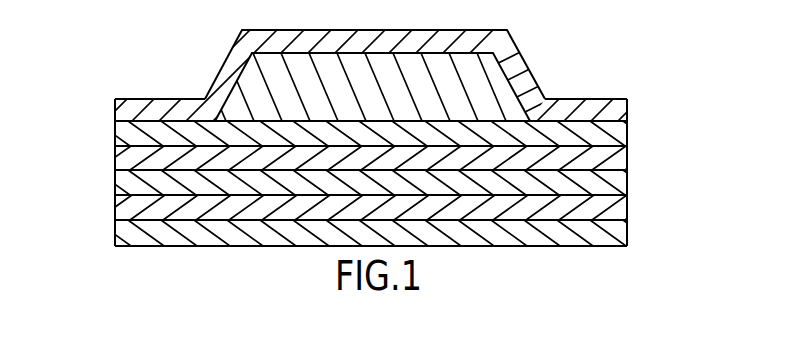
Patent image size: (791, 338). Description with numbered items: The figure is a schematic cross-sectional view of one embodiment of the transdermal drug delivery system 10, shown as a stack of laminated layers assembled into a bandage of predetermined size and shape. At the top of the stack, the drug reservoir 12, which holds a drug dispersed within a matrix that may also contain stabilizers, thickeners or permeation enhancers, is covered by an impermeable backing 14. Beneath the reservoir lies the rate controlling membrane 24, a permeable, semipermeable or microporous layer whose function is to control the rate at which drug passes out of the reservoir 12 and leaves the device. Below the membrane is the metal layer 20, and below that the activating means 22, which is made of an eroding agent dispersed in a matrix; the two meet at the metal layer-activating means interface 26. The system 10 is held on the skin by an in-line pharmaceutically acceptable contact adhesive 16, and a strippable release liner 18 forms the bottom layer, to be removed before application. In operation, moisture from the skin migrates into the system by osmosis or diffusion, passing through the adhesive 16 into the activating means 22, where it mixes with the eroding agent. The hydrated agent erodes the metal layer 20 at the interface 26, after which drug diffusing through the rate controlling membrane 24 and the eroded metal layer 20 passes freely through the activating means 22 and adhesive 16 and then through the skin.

The transdermal drug delivery system 10 is at (601, 39).
The drug reservoir 12 is at (438, 57).
The impermeable backing 14 is at (613, 102).
The rate controlling membrane 24 is at (620, 130).
The metal layer 20 is at (620, 158).
The metal layer-activating means interface 26 is at (135, 167).
The activating means 22 is at (620, 180).
The contact adhesive 16 is at (127, 208).
The strippable release liner 18 is at (183, 240).